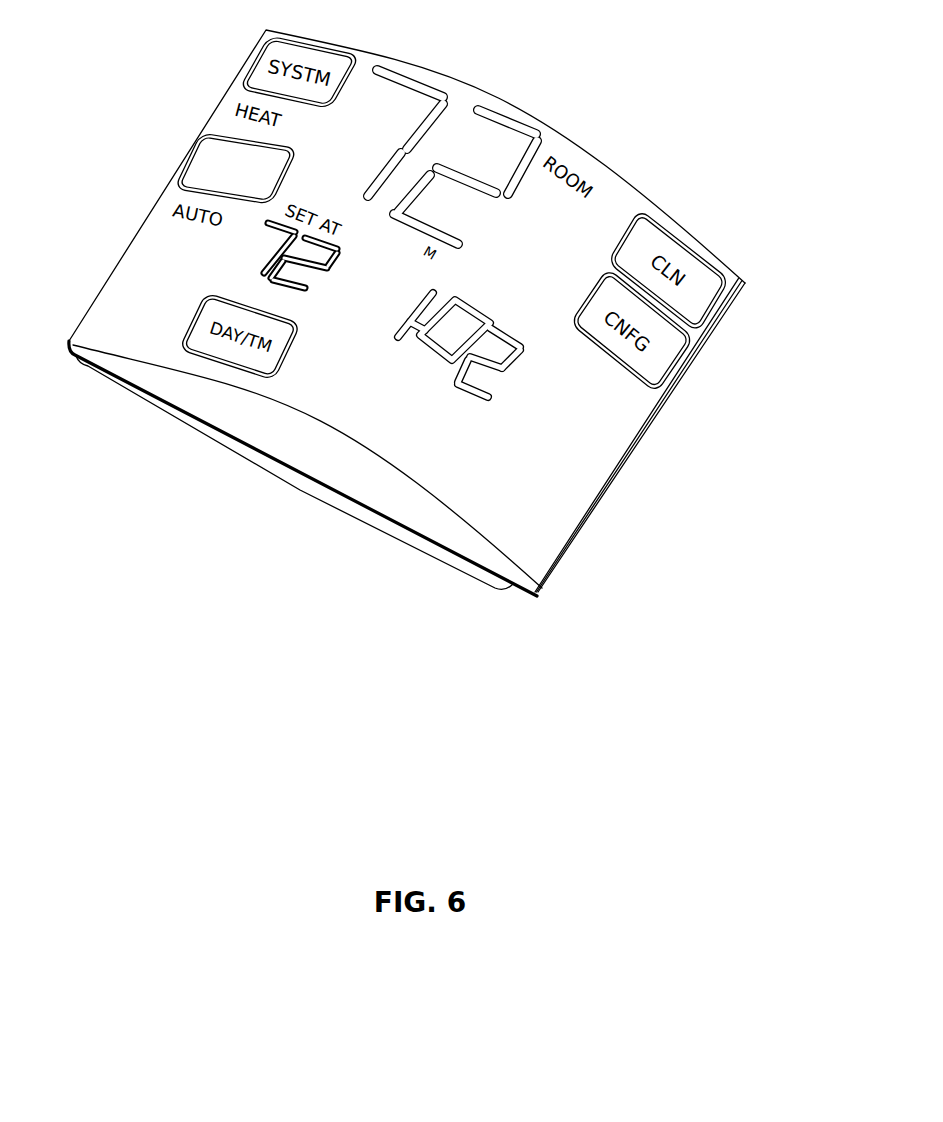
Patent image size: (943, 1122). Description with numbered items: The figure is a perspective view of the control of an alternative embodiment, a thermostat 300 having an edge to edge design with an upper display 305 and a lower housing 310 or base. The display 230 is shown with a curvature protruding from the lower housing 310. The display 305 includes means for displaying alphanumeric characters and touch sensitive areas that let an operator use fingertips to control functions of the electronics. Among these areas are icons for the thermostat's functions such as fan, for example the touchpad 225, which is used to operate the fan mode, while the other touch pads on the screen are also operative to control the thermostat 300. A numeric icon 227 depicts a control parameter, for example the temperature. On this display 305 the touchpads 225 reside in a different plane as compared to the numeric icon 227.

The touchpad 225 is at (209, 168).
The numeric icon 227 is at (463, 173).
The display 230 is at (428, 455).
The thermostat 300 is at (640, 190).
The upper display 305 is at (614, 432).
The lower housing 310 is at (132, 392).